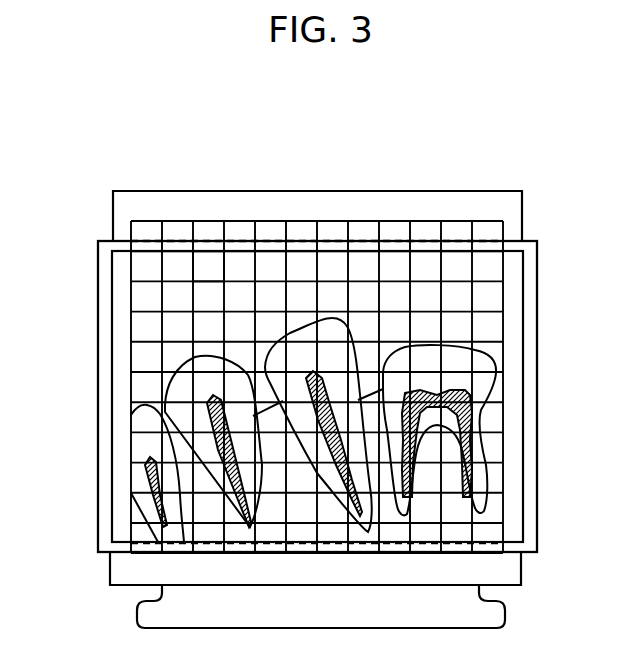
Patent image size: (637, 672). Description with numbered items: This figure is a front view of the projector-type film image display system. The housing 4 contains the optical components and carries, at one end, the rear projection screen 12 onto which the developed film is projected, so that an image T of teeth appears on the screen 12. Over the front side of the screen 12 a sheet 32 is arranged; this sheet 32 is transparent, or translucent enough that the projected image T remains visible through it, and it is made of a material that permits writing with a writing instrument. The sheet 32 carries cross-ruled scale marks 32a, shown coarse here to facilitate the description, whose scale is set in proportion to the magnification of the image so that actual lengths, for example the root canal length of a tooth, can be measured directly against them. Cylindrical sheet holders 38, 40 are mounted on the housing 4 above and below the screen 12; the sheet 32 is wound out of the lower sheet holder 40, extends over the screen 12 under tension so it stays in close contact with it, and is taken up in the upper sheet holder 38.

The housing 4 is at (532, 413).
The rear projection screen 12 is at (513, 362).
The sheet 32 is at (505, 300).
The cross-ruled scale marks 32a is at (205, 280).
The sheet holder 38 is at (398, 203).
The sheet holder 40 is at (503, 572).
The image T is at (178, 366).